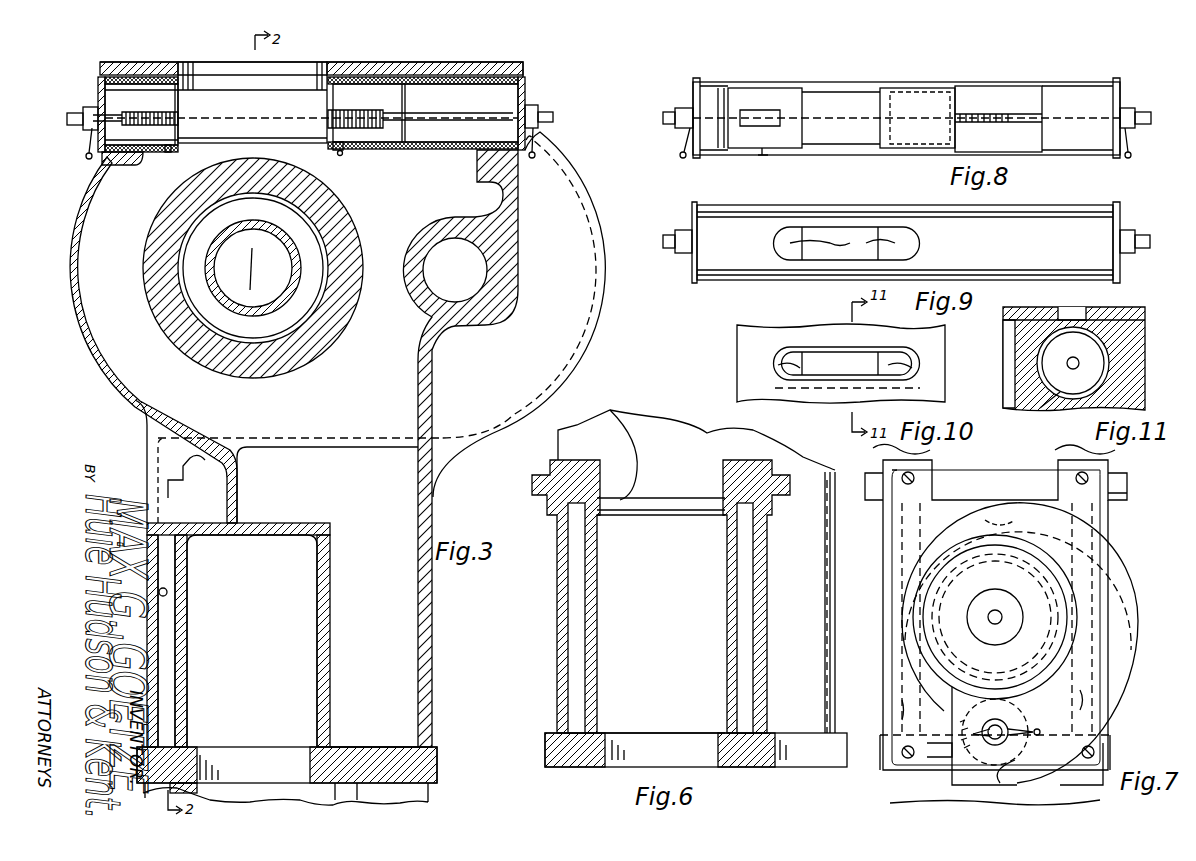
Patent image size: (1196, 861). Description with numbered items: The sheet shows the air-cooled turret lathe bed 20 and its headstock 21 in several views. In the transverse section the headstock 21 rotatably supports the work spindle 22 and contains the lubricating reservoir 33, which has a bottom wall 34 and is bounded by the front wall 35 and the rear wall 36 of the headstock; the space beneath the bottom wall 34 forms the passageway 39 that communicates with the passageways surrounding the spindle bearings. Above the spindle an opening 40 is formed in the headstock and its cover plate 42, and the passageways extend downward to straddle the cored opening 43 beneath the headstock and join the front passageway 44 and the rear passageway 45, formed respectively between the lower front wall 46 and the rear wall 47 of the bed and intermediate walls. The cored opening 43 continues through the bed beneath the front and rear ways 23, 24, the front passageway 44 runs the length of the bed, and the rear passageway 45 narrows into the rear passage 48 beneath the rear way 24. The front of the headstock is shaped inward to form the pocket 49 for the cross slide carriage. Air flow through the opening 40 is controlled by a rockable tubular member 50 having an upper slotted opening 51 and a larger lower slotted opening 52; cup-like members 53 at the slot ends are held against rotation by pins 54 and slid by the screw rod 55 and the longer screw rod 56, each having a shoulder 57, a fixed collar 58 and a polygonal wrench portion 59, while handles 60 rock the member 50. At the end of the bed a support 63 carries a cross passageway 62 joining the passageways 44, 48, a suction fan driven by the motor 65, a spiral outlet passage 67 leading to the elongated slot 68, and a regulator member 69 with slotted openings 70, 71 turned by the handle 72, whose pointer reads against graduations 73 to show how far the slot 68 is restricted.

In FIG. 3, the bed 20 is at (437, 766).
In FIG. 6, the bed 20 is at (808, 760).
In FIG. 7, the bed 20 is at (1108, 752).
In FIG. 3, the headstock 21 is at (415, 63).
In FIG. 3, the work spindle 22 is at (252, 250).
In FIG. 6, the front way 23 is at (565, 460).
In FIG. 7, the front way 23 is at (932, 462).
In FIG. 6, the rear way 24 is at (748, 460).
In FIG. 7, the rear way 24 is at (1108, 462).
In FIG. 3, the lubricating reservoir 33 is at (470, 420).
In FIG. 3, the bottom wall 34 is at (340, 436).
In FIG. 3, the front wall of headstock 35 is at (92, 345).
In FIG. 3, the rear wall of headstock 36 is at (600, 285).
In FIG. 3, the passageway 39 is at (327, 485).
In FIG. 10, the opening 40 is at (818, 350).
In FIG. 11, the opening 40 is at (1075, 315).
In FIG. 3, the cover plate 42 is at (500, 62).
In FIG. 10, the cover plate 42 is at (778, 330).
In FIG. 11, the cover plate 42 is at (1140, 318).
In FIG. 3, the cored opening 43 is at (252, 641).
In FIG. 3, the front passageway 44 is at (160, 590).
In FIG. 6, the front passageway 44 is at (575, 683).
In FIG. 7, the front passageway 44 is at (905, 680).
In FIG. 3, the rear passageway 45 is at (400, 660).
In FIG. 6, the rear passageway 45 is at (828, 622).
In FIG. 7, the rear passageway 45 is at (860, 573).
In FIG. 3, the lower front wall 46 is at (147, 552).
In FIG. 3, the rear wall of bed 47 is at (432, 622).
In FIG. 6, the rear passage 48 is at (748, 615).
In FIG. 7, the rear passage 48 is at (1100, 690).
In FIG. 3, the recess or pocket 49 is at (178, 455).
In FIG. 3, the tubular member 50 is at (400, 150).
In FIG. 8, the tubular member 50 is at (1030, 85).
In FIG. 9, the tubular member 50 is at (1000, 211).
In FIG. 3, the upper slotted opening 51 is at (320, 70).
In FIG. 8, the upper slotted opening 51 is at (920, 88).
In FIG. 9, the upper slotted opening 51 is at (860, 227).
In FIG. 10, the upper slotted opening 51 is at (835, 358).
In FIG. 11, the upper slotted opening 51 is at (1095, 332).
In FIG. 3, the lower slotted opening 52 is at (341, 156).
In FIG. 11, the lower slotted opening 52 is at (1055, 400).
In FIG. 3, the cup-like member 53 is at (190, 68).
In FIG. 8, the cup-like member 53 is at (875, 105).
In FIG. 9, the cup-like member 53 is at (842, 243).
In FIG. 10, the cup-like member 53 is at (890, 360).
In FIG. 11, the cup-like member 53 is at (1085, 348).
In FIG. 3, the pin 54 is at (170, 152).
In FIG. 8, the pin 54 is at (765, 155).
In FIG. 3, the screw rod 55 is at (106, 160).
In FIG. 8, the screw rod 55 is at (728, 150).
In FIG. 3, the longer screw rod 56 is at (480, 130).
In FIG. 8, the longer screw rod 56 is at (1002, 114).
In FIG. 11, the longer screw rod 56 is at (1078, 364).
In FIG. 3, the shoulder 57 is at (103, 78).
In FIG. 3, the collar 58 is at (93, 107).
In FIG. 8, the collar 58 is at (690, 106).
In FIG. 9, the collar 58 is at (688, 230).
In FIG. 3, the polygonal end wrench portion 59 is at (67, 118).
In FIG. 8, the polygonal end wrench portion 59 is at (663, 118).
In FIG. 9, the polygonal end wrench portion 59 is at (663, 242).
In FIG. 3, the handle 60 is at (87, 150).
In FIG. 8, the handle 60 is at (683, 130).
In FIG. 9, the handle 60 is at (690, 255).
In FIG. 7, the cross passageway 62 is at (1000, 520).
In FIG. 7, the support 63 is at (1100, 503).
In FIG. 7, the variable speed electric motor 65 is at (1032, 592).
In FIG. 7, the outlet passage 67 is at (1132, 612).
In FIG. 7, the elongated opening or slot 68 is at (975, 695).
In FIG. 7, the valve regulator member 69 is at (1020, 725).
In FIG. 7, the slotted opening 70 is at (1040, 732).
In FIG. 7, the slotted opening 71 is at (960, 760).
In FIG. 7, the handle 72 is at (1015, 760).
In FIG. 7, the graduations 73 is at (965, 735).